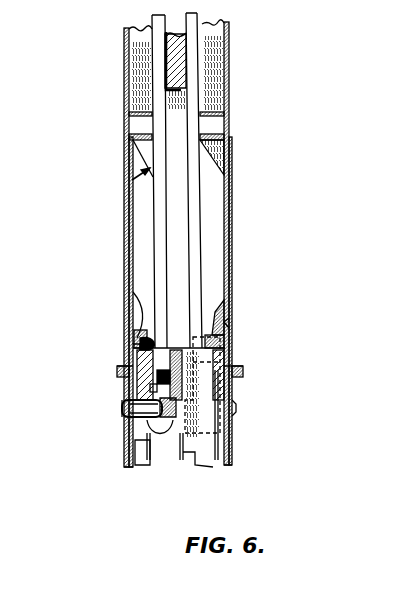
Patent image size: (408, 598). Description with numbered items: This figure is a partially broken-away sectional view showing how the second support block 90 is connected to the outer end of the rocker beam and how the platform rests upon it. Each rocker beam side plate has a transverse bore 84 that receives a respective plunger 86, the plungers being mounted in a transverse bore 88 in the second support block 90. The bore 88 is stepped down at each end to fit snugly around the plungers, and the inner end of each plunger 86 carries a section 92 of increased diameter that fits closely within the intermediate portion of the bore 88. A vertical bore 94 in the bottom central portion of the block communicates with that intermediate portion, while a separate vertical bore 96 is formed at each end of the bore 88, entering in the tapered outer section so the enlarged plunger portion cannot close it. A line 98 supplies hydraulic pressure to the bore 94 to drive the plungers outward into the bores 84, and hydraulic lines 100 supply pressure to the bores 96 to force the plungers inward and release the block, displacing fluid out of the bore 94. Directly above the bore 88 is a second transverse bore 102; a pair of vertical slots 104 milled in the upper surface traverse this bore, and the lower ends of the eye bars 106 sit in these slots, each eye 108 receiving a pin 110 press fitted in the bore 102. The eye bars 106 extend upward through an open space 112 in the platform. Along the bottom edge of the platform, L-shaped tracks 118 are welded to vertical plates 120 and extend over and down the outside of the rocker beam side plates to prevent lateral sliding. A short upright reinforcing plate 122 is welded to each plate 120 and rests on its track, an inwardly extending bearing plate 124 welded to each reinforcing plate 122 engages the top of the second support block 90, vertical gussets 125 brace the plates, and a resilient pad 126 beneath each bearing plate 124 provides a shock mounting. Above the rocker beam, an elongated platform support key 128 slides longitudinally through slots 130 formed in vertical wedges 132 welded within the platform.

The transverse bore 84 is at (124, 414).
The plunger 86 is at (127, 404).
The transverse bore 88 is at (148, 388).
The second support block 90 is at (167, 435).
The section of increased diameter 92 is at (140, 420).
The vertical bore 94 is at (172, 435).
The vertical bore 96 is at (135, 443).
The line 98 is at (200, 460).
The hydraulic lines 100 is at (138, 466).
The second transverse bore 102 is at (140, 360).
The vertical slots 104 is at (218, 312).
The eye bars 106 is at (193, 233).
The eye 108 is at (212, 384).
The pin 110 is at (157, 347).
The open space 112 is at (130, 180).
The L-shaped tracks 118 is at (120, 371).
The vertical plate 120 is at (126, 216).
The reinforcing plate 122 is at (143, 330).
The bearing plate 124 is at (138, 300).
The vertical gussets 125 is at (133, 347).
The resilient pad 126 is at (232, 335).
The platform support key 128 is at (176, 50).
The slots 130 is at (182, 81).
The vertical wedges 132 is at (185, 108).